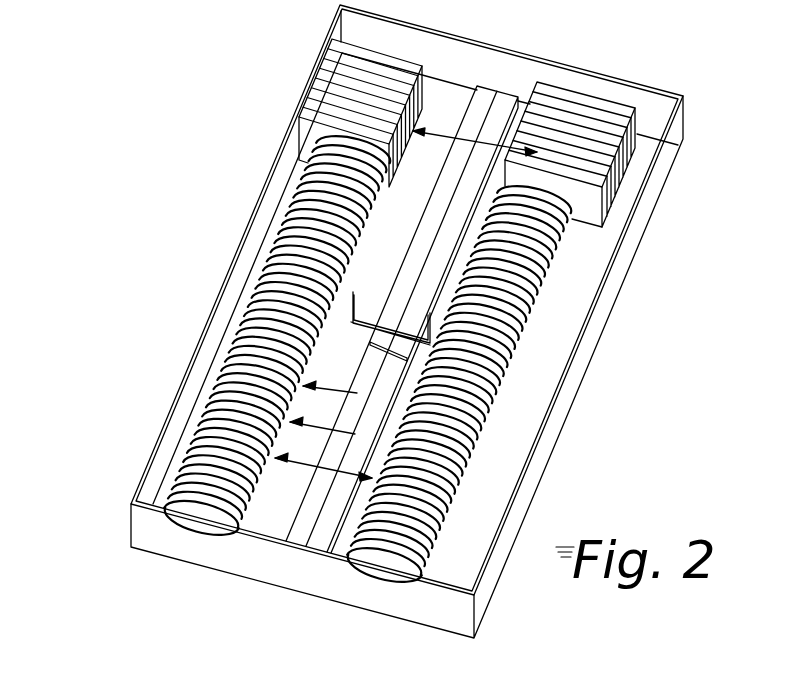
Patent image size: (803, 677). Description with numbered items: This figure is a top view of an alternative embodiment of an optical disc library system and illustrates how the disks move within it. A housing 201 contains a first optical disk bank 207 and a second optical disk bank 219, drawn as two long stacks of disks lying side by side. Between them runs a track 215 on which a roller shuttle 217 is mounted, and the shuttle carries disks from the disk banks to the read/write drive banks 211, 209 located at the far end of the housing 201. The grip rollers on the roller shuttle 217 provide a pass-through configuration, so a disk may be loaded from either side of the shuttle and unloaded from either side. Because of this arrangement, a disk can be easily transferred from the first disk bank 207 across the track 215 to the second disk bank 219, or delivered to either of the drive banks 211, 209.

The housing 201 is at (350, 321).
The first optical disk bank 207 is at (258, 281).
The read/write drive bank 209 is at (637, 142).
The read/write drive bank 211 is at (324, 74).
The track 215 is at (505, 126).
The roller shuttle 217 is at (364, 318).
The second optical disk bank 219 is at (540, 332).